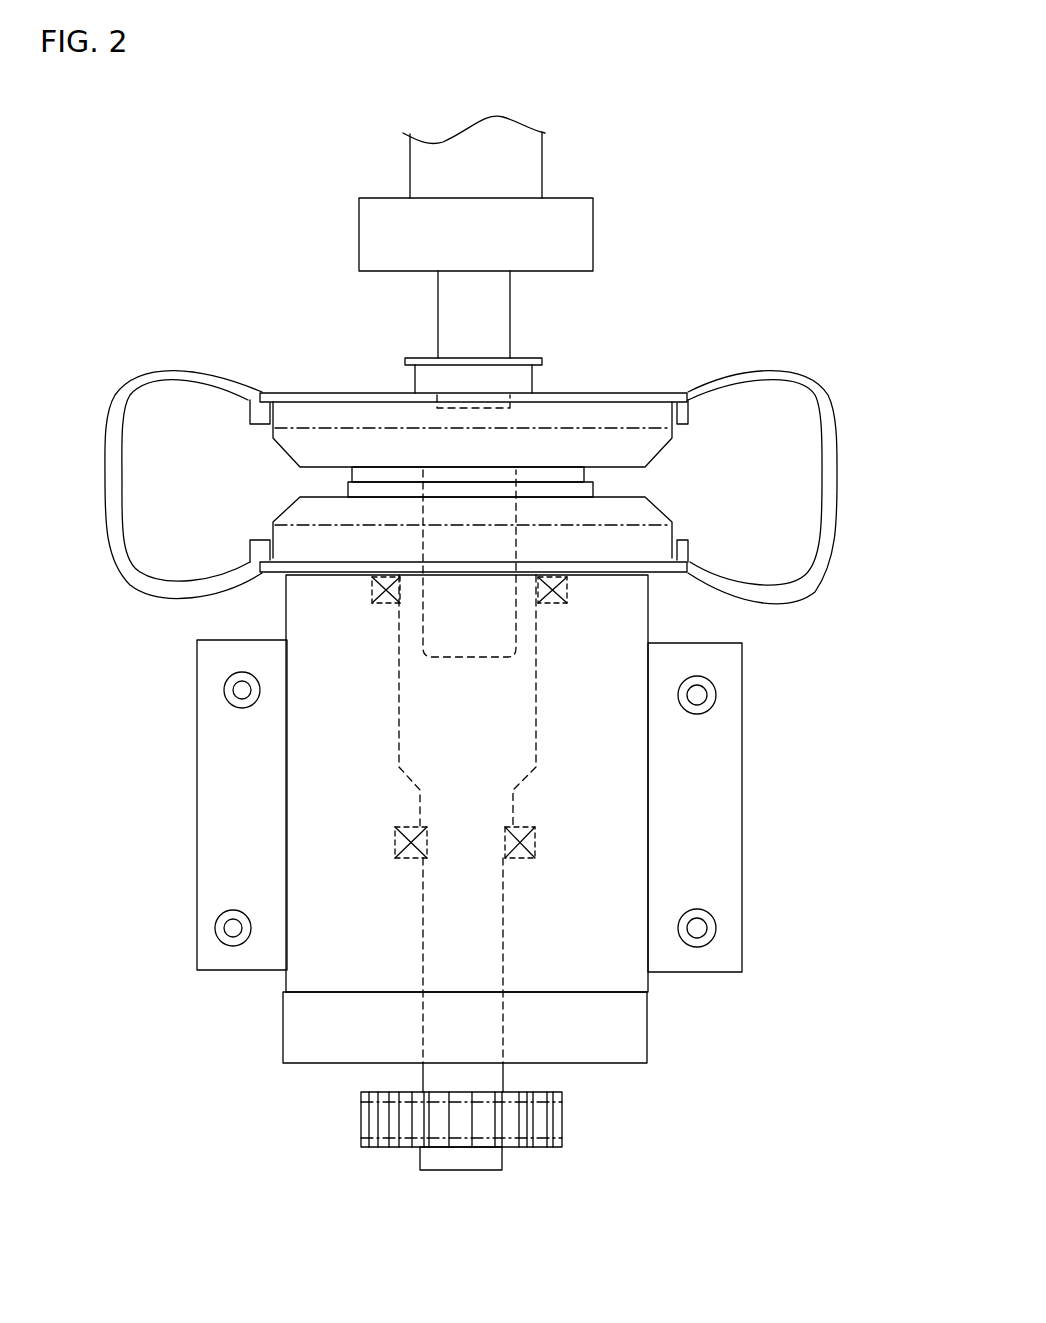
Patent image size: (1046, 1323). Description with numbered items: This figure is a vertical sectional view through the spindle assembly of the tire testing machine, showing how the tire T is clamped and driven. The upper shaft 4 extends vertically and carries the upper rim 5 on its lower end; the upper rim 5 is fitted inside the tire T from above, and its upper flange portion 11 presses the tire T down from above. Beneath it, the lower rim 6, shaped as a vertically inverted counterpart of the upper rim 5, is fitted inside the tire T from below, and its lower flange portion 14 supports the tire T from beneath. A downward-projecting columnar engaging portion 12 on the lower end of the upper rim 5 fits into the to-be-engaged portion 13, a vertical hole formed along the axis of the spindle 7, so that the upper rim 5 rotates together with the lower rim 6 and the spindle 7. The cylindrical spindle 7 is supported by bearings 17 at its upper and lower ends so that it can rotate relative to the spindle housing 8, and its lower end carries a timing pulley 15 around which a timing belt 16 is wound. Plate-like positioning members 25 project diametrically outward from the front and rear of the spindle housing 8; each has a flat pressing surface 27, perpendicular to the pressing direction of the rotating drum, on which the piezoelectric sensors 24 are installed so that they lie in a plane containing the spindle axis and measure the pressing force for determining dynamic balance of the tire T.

The upper shaft 4 is at (528, 157).
The upper rim 5 is at (638, 417).
The lower rim 6 is at (295, 548).
The spindle 7 is at (540, 617).
The spindle housing 8 is at (635, 775).
The upper flange portion 11 is at (610, 397).
The engaging portion 12 is at (520, 490).
The to-be-engaged portion 13 is at (437, 467).
The lower flange portion 14 is at (307, 567).
The timing pulley 15 is at (531, 1137).
The timing belt 16 is at (379, 1135).
The bearings 17 is at (540, 833).
The piezoelectric sensors 24 is at (215, 930).
The positioning members 25 is at (197, 745).
The pressing surface 27 is at (207, 812).
The tire T is at (793, 383).